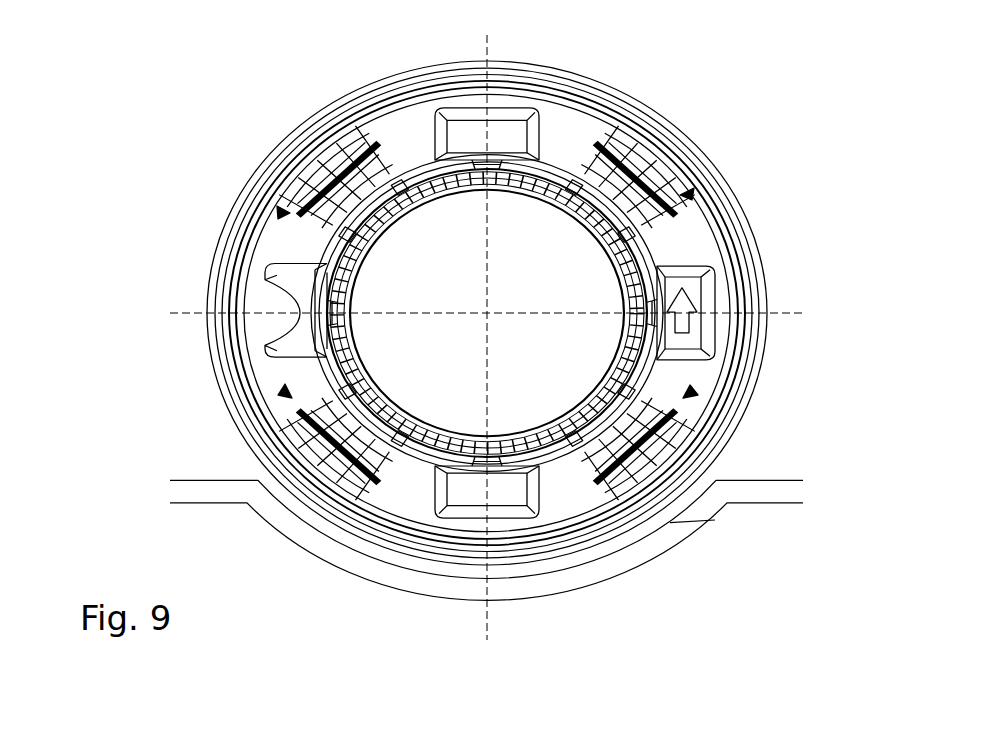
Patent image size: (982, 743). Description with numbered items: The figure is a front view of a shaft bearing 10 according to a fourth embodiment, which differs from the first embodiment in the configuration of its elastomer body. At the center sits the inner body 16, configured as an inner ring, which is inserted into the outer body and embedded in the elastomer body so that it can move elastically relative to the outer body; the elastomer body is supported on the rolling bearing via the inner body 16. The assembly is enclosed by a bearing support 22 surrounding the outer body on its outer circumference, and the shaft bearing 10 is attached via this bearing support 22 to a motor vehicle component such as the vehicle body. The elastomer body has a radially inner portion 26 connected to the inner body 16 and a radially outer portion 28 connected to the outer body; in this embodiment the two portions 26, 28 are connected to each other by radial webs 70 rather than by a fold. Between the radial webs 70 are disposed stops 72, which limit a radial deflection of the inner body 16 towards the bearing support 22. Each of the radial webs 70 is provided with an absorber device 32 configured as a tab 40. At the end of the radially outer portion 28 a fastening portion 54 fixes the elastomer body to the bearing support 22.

The shaft bearing 10 is at (737, 134).
The inner body 16 is at (336, 252).
The bearing support 22 is at (763, 237).
The radially inner portion 26 is at (373, 197).
The radially outer portion 28 is at (663, 146).
The absorber device 32 is at (285, 391).
The tab 40 is at (384, 135).
The fastening portion 54 is at (278, 212).
The radial webs 70 is at (313, 138).
The stops 72 is at (512, 123).